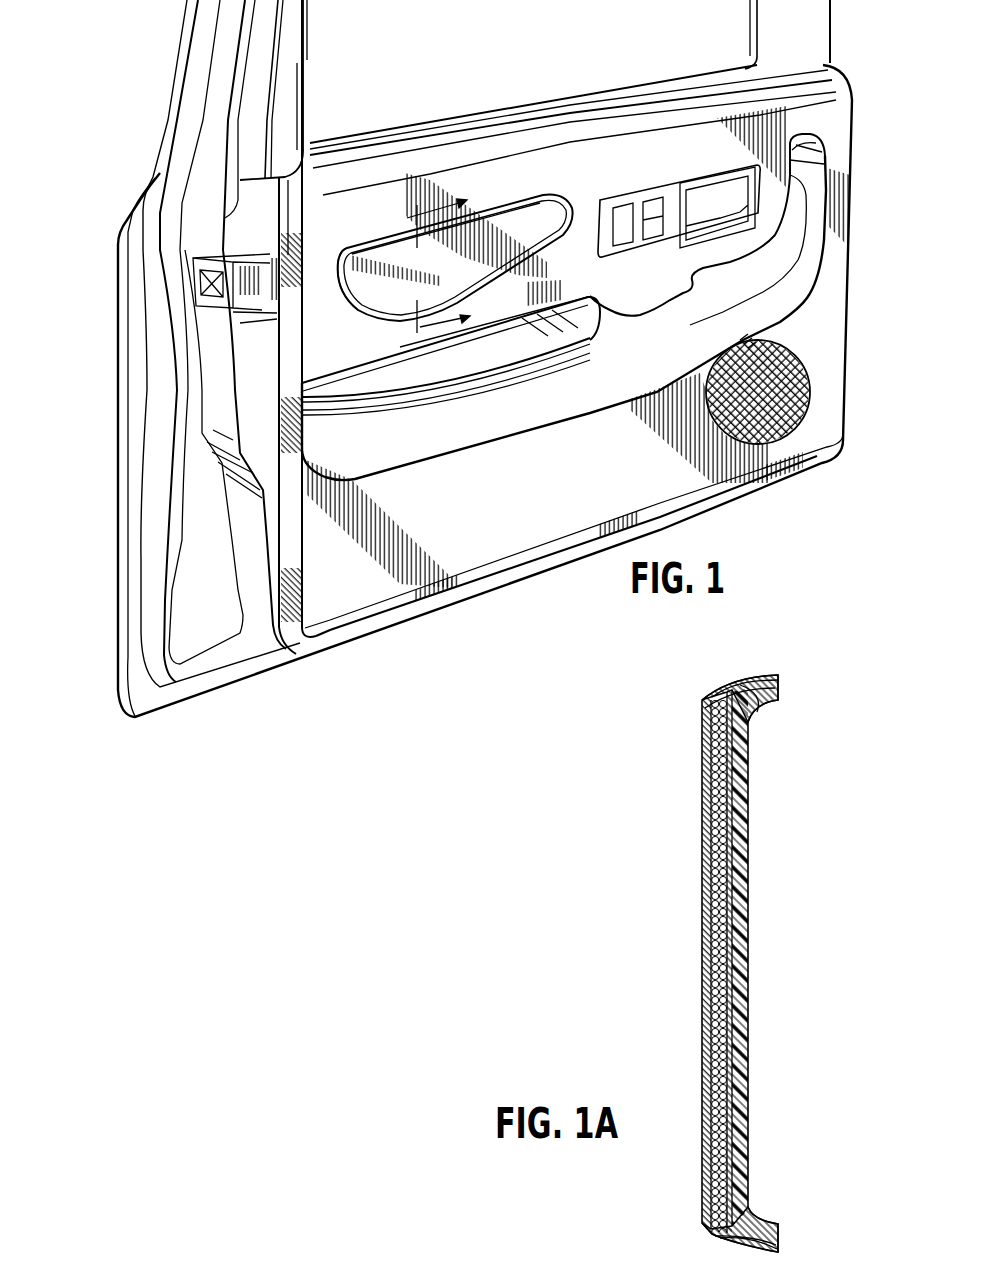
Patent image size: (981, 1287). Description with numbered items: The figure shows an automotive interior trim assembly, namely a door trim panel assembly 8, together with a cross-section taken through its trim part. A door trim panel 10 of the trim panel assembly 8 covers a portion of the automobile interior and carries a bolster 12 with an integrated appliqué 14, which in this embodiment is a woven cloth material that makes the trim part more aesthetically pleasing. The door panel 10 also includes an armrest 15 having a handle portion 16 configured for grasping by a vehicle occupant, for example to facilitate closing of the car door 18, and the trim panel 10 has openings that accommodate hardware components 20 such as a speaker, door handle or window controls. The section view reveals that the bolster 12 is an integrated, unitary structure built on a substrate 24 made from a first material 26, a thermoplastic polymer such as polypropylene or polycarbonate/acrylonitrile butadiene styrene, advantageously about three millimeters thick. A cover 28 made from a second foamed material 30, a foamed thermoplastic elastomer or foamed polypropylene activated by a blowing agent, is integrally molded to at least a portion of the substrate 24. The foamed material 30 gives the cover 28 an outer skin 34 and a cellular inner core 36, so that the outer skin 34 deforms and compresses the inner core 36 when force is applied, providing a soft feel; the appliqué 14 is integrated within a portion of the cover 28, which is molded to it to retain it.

In FIG. 1, the door trim panel assembly 8 is at (878, 90).
In FIG. 1, the door trim panel 10 is at (843, 311).
In FIG. 1, the bolster 12 is at (572, 195).
In FIG. 1A, the bolster 12 is at (644, 773).
In FIG. 1, the appliqué 14 is at (513, 222).
In FIG. 1A, the appliqué 14 is at (703, 815).
In FIG. 1, the armrest 15 is at (523, 430).
In FIG. 1, the handle portion 16 is at (647, 306).
In FIG. 1, the car door 18 is at (86, 92).
In FIG. 1, the hardware components 20 is at (673, 193).
In FIG. 1A, the substrate 24 is at (748, 748).
In FIG. 1A, the first material 26 is at (743, 783).
In FIG. 1, the cover 28 is at (346, 247).
In FIG. 1A, the cover 28 is at (710, 1230).
In FIG. 1A, the second foamed material 30 is at (703, 689).
In FIG. 1A, the outer skin 34 is at (757, 681).
In FIG. 1A, the cellular inner core 36 is at (712, 690).